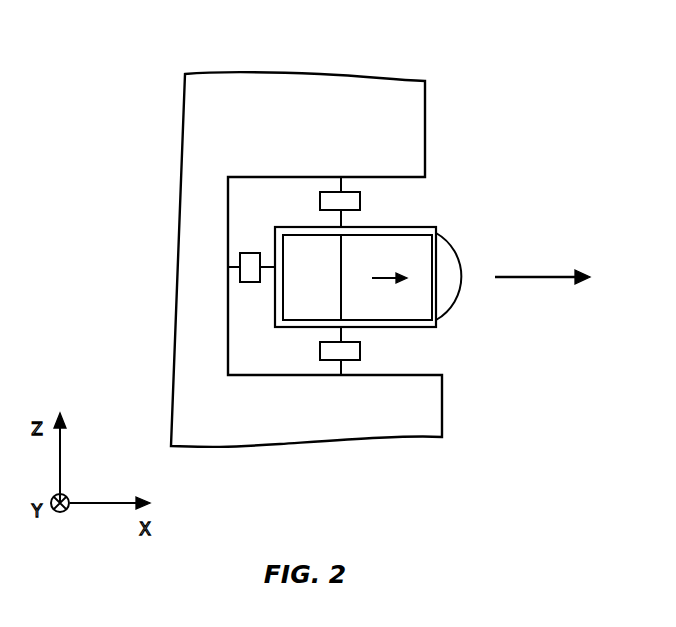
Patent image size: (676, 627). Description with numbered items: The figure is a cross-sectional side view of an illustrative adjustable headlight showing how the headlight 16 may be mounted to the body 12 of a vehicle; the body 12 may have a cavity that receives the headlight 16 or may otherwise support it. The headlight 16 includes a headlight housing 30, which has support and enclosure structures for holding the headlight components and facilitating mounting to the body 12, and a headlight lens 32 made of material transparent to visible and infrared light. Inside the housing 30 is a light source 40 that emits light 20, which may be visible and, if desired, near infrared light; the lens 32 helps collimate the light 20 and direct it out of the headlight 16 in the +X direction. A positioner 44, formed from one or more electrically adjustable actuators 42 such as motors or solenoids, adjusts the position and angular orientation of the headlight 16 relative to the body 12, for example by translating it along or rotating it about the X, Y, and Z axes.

The body 12 is at (312, 87).
The headlight 16 is at (490, 212).
The light 20 is at (387, 282).
The headlight housing 30 is at (414, 233).
The headlight lens 32 is at (453, 276).
The light source 40 is at (298, 303).
The actuators 42 is at (348, 200).
The positioner 44 is at (237, 232).